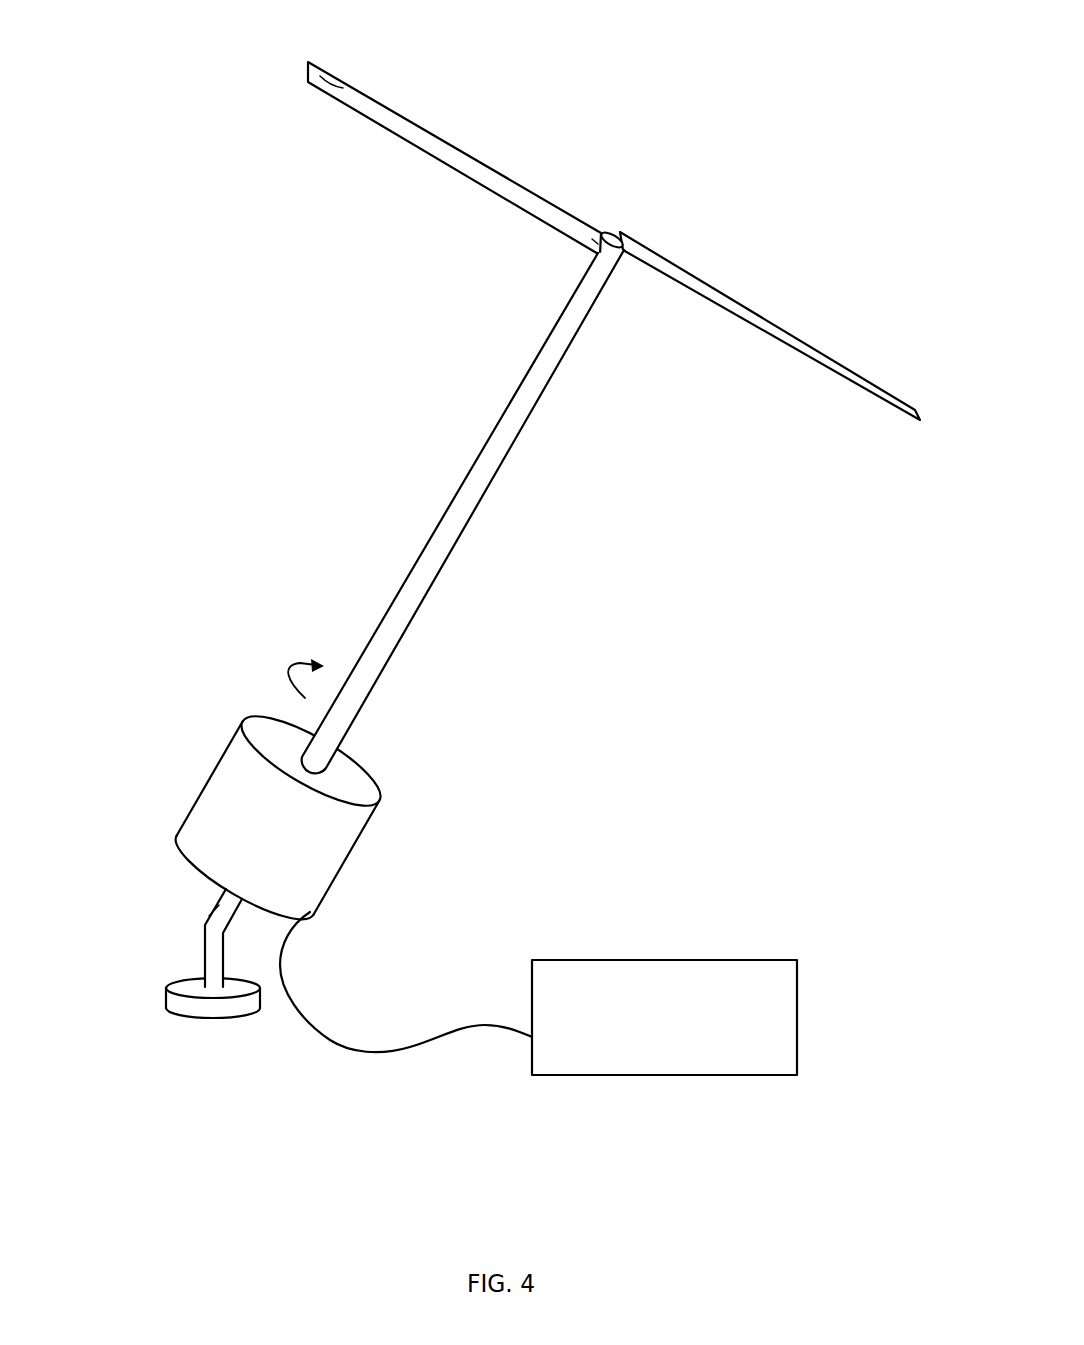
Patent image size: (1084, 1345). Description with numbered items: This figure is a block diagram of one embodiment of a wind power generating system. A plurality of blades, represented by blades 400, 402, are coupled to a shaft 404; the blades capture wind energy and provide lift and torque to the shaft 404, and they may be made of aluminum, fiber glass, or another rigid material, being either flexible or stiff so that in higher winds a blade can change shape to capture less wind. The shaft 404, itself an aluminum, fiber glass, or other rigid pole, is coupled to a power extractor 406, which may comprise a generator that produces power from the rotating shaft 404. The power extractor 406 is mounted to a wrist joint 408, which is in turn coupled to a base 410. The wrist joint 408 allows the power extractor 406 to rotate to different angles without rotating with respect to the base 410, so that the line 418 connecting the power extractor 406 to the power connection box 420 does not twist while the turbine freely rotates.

The blade 400 is at (322, 72).
The blade 402 is at (827, 362).
The shaft 404 is at (479, 448).
The power extractor 406 is at (216, 768).
The wrist joint 408 is at (205, 923).
The base 410 is at (167, 1002).
The line 418 is at (445, 1030).
The power connection box 420 is at (618, 960).